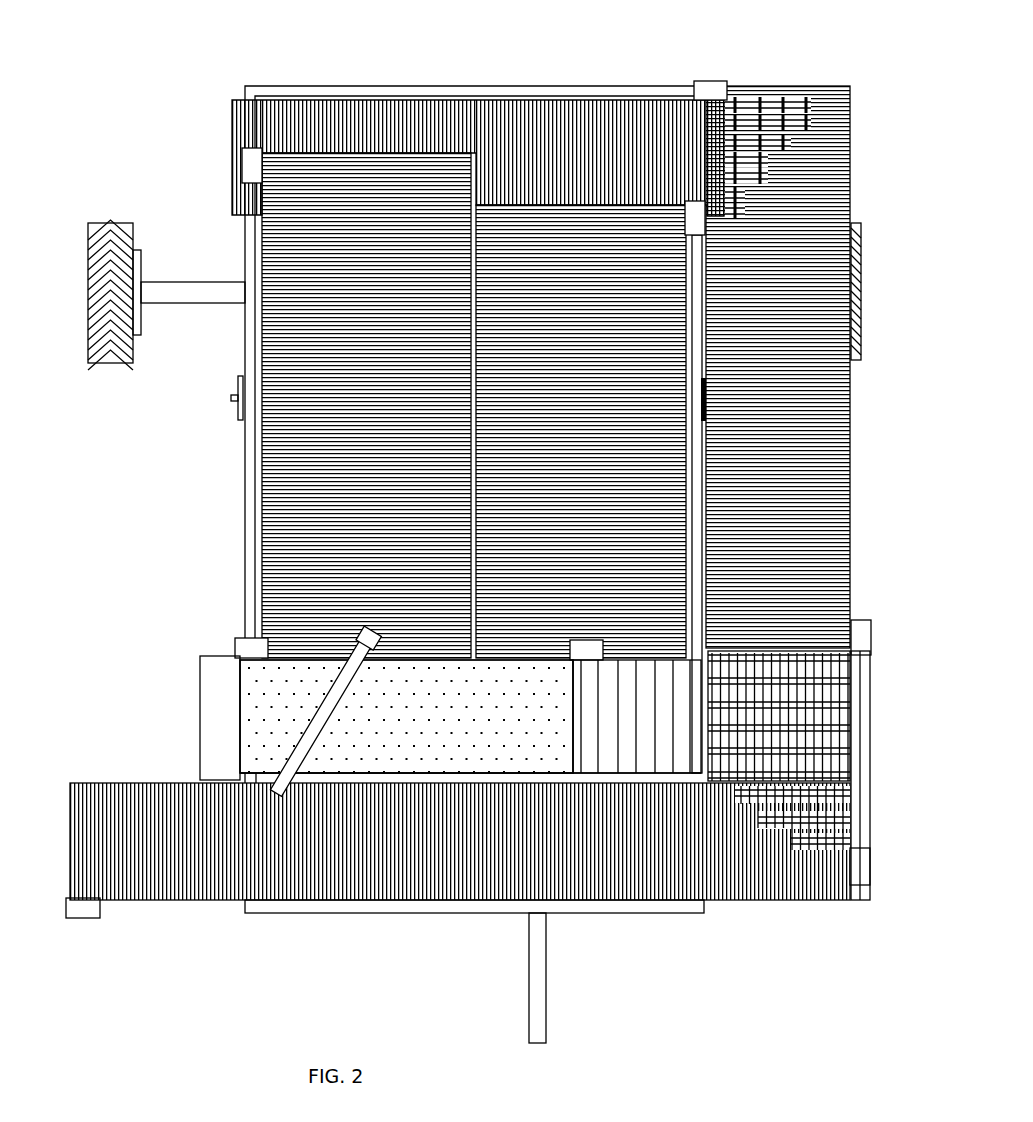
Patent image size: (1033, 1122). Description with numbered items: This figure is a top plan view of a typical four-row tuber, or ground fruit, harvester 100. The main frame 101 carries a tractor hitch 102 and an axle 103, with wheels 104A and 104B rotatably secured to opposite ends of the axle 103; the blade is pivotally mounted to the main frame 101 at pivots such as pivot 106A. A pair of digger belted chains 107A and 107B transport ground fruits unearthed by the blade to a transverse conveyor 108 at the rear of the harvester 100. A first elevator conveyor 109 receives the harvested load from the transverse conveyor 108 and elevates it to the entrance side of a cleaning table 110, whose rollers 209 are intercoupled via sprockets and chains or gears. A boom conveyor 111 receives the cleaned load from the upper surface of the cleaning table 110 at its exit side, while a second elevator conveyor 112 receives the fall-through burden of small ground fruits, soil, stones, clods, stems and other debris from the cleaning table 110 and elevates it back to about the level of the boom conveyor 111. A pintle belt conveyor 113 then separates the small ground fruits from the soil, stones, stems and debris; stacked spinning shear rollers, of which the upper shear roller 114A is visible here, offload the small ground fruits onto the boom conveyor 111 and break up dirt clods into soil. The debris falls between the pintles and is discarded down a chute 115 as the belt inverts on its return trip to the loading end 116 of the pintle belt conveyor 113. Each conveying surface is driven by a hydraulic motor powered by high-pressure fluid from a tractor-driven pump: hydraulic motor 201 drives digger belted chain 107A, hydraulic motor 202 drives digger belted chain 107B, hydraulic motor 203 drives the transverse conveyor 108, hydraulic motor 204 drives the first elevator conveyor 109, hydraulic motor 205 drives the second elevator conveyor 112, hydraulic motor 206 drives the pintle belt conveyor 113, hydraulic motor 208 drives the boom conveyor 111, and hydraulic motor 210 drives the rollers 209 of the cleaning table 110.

The ground fruit harvester 100 is at (170, 50).
The main frame 101 is at (418, 900).
The tractor hitch 102 is at (529, 965).
The axle 103 is at (217, 285).
The wheel 104A is at (97, 346).
The wheel 104B is at (848, 217).
The pivot 106A is at (226, 398).
The digger belted chain 107A is at (258, 495).
The digger belted chain 107B is at (470, 488).
The transverse conveyor 108 is at (576, 108).
The first elevator conveyor 109 is at (778, 83).
The cleaning table 110 is at (852, 774).
The boom conveyor 111 is at (195, 873).
The second elevator conveyor 112 is at (647, 724).
The pintle belt conveyor 113 is at (240, 702).
The upper shear roller 114A is at (255, 712).
The chute 115 is at (186, 739).
The loading end 116 is at (557, 724).
The hydraulic motor 201 is at (244, 157).
The hydraulic motor 202 is at (688, 210).
The hydraulic motor 203 is at (703, 83).
The hydraulic motor 204 is at (853, 625).
The hydraulic motor 205 is at (580, 640).
The hydraulic motor 206 is at (240, 642).
The hydraulic motor 208 is at (75, 900).
The rollers 209 is at (822, 838).
The hydraulic motor 210 is at (853, 862).